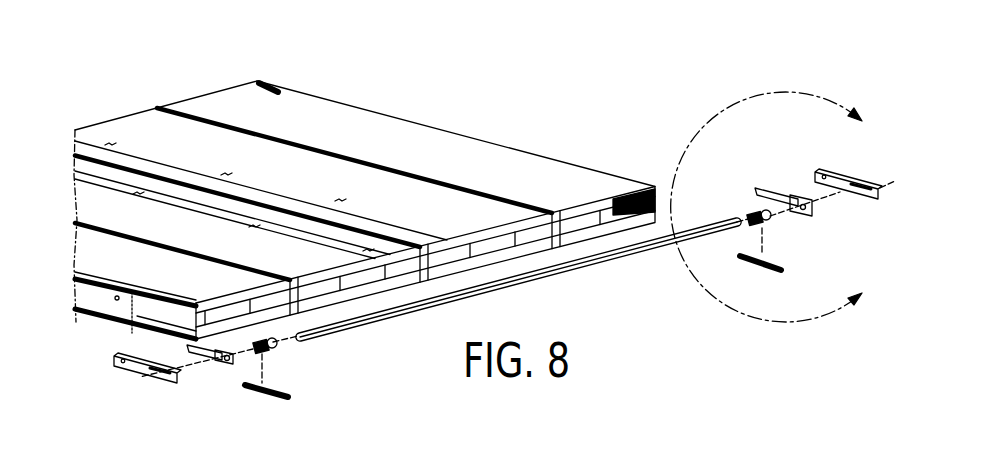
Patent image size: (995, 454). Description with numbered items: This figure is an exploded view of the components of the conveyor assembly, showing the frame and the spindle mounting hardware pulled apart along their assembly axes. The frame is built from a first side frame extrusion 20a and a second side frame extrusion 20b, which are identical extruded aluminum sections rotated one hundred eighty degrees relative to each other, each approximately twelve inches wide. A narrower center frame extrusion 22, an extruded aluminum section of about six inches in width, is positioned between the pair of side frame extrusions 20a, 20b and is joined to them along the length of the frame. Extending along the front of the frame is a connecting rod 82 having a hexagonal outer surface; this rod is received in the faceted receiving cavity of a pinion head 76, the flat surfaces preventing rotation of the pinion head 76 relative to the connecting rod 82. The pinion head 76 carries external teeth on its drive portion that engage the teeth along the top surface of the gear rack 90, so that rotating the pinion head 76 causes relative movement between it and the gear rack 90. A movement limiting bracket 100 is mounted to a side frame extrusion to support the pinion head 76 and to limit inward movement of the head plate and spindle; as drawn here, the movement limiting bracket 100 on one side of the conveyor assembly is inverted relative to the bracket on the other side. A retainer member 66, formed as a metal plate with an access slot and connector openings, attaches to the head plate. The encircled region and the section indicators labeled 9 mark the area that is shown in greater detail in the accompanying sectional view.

The first side frame extrusion 20a is at (90, 207).
The second side frame extrusion 20b is at (453, 146).
The center frame extrusion 22 is at (207, 140).
The retainer member 66 is at (122, 368).
The pinion head 76 is at (274, 350).
The connecting rod 82 is at (357, 320).
The gear rack 90 is at (265, 398).
The movement limiting bracket 100 is at (227, 362).
The section line 9- 9 is at (778, 206).